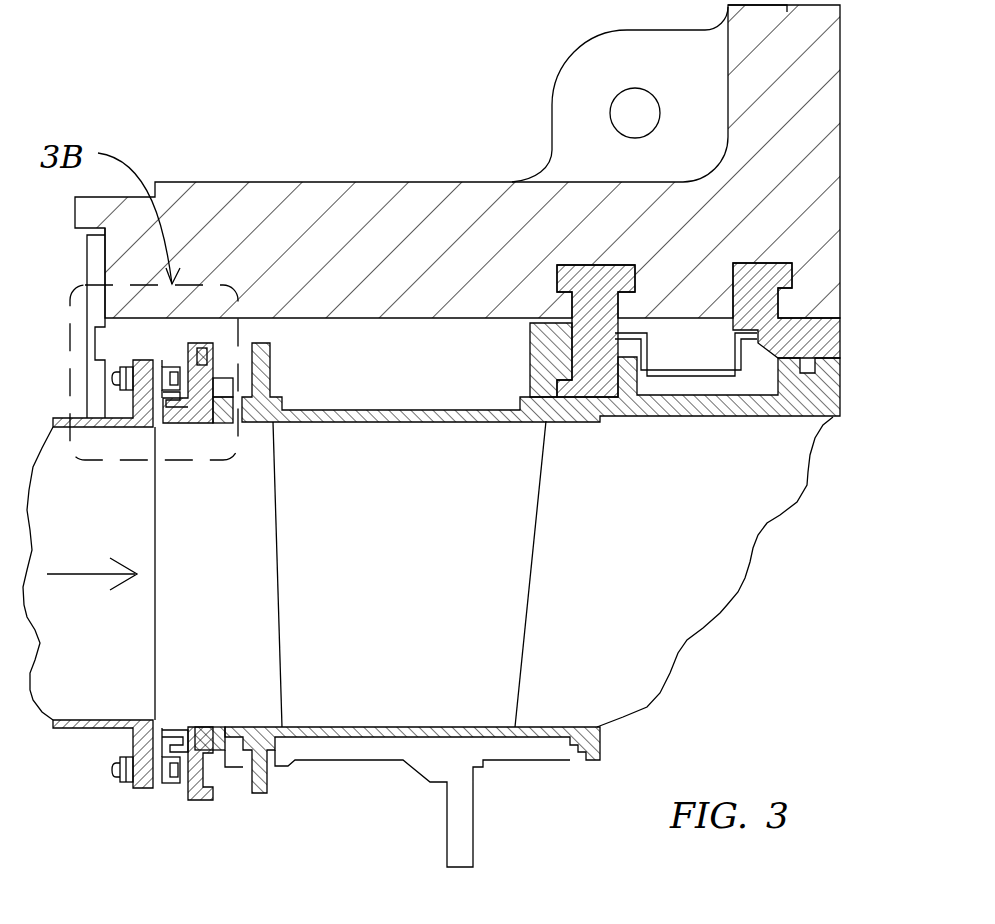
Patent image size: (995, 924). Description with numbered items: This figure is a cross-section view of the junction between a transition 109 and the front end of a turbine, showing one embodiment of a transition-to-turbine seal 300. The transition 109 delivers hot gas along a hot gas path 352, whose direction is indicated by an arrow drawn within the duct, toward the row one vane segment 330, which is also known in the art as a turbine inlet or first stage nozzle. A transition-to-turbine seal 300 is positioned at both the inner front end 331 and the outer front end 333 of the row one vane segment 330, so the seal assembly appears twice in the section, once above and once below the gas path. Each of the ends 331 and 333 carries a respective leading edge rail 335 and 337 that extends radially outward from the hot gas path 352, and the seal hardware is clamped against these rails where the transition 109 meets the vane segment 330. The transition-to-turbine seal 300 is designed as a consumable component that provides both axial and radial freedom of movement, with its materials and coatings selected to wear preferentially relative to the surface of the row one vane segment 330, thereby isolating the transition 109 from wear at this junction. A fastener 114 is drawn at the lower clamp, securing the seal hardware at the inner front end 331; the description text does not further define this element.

The transition-to-turbine seal 300 is at (206, 514).
The leading edge rail 337 is at (203, 377).
The row 1 vane segment 330 is at (402, 420).
The outer front end 333 is at (213, 413).
The hot gas path 352 is at (115, 528).
The transition 109 is at (100, 722).
The inner front end 331 is at (195, 727).
The bolt 114 is at (137, 742).
The leading edge rail 335 is at (207, 780).